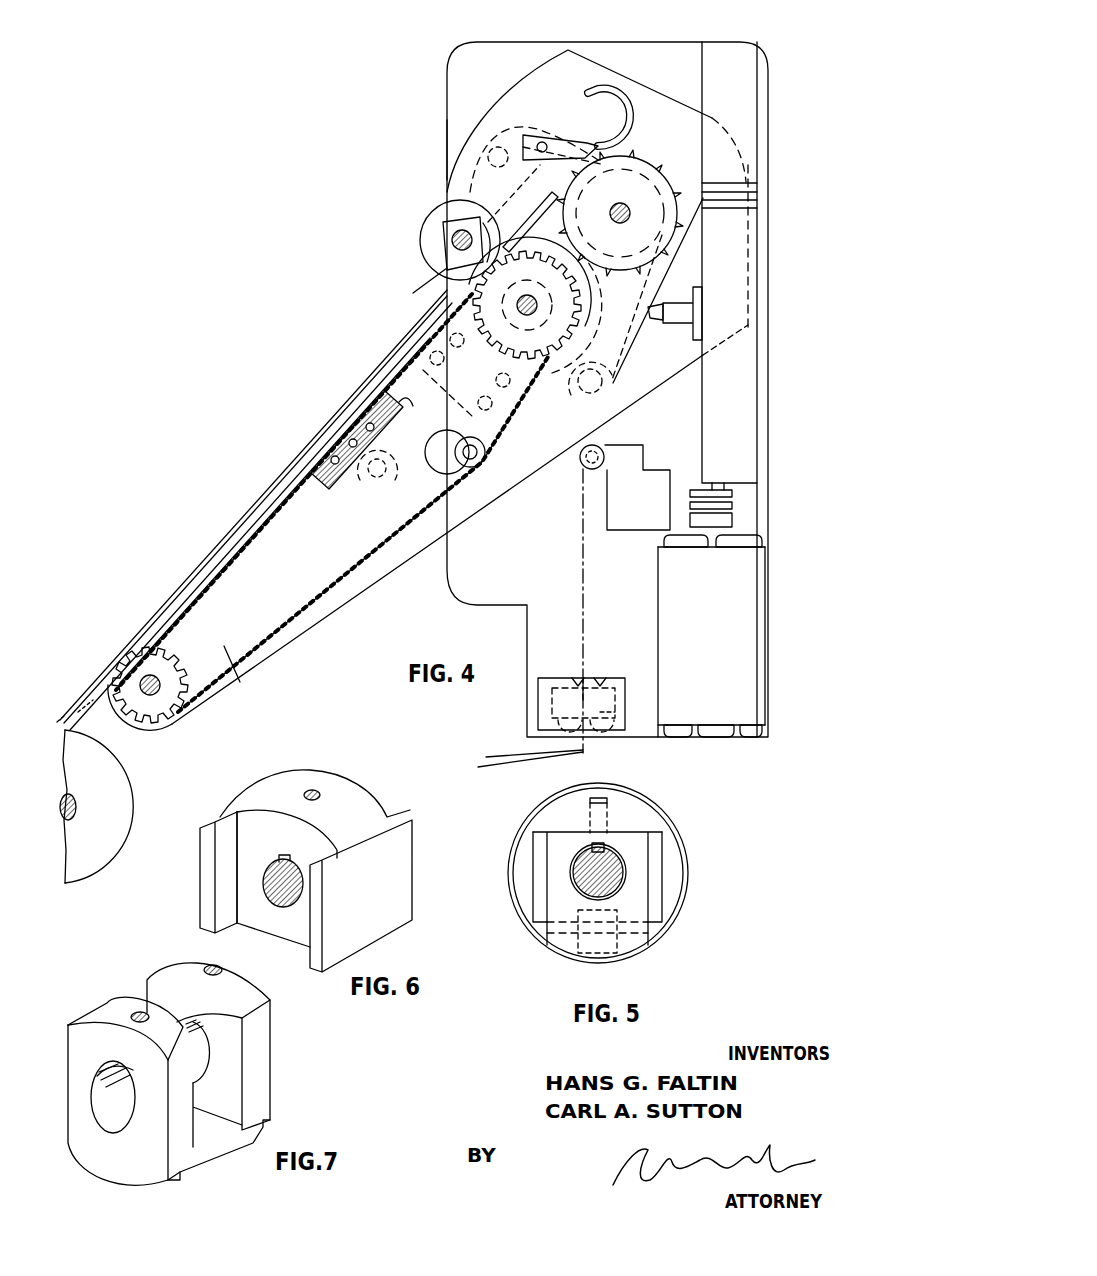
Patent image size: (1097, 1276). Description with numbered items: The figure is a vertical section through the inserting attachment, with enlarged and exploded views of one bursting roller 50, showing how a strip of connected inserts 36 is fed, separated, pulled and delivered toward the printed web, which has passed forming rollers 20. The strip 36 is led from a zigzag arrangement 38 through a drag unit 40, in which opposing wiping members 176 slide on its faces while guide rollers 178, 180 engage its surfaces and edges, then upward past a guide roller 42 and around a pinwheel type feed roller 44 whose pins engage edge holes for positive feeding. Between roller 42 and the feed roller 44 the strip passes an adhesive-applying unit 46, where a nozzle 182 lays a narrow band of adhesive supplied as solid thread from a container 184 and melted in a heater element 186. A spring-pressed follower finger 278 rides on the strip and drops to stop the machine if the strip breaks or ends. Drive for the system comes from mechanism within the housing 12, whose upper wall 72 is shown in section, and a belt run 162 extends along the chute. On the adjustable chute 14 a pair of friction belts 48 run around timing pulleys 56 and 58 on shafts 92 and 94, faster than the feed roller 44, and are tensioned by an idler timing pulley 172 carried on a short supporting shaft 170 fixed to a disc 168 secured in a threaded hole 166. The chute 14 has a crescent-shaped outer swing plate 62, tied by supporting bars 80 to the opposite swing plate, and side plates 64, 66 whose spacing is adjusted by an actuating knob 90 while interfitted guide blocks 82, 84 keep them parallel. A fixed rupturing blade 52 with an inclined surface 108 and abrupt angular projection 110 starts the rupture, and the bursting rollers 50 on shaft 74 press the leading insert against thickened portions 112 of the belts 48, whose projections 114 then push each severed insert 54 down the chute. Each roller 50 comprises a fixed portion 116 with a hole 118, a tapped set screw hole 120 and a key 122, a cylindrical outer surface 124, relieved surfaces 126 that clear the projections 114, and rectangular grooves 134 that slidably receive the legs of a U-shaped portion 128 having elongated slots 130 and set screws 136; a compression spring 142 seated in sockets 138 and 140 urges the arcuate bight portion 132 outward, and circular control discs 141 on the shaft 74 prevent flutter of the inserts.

In FIG. 4, the housing 12 is at (443, 95).
In FIG. 4, the adjustable chute 14 is at (228, 528).
In FIG. 4, the forming rollers 20 is at (128, 786).
In FIG. 4, the strip of connected inserts 36 is at (580, 573).
In FIG. 4, the zigzag arrangement 38 is at (528, 750).
In FIG. 4, the drag unit 40 is at (576, 668).
In FIG. 4, the guide roller 42 is at (603, 450).
In FIG. 4, the pinwheel type feed roller 44 is at (651, 168).
In FIG. 4, the adhesive-applying unit 46 is at (740, 300).
In FIG. 4, the flexible friction belts 48 is at (294, 478).
In FIG. 4, the pressure or bursting rollers 50 is at (437, 218).
In FIG. 5, the pressure or bursting rollers 50 is at (670, 893).
In FIG. 4, the fixed rupturing blade 52 is at (534, 213).
In FIG. 4, the severed or separated inserts 54 is at (73, 702).
In FIG. 4, the timing pulley 56 is at (505, 353).
In FIG. 4, the timing pulley 58 is at (173, 668).
In FIG. 4, the outer swing plate 62 is at (535, 138).
In FIG. 4, the side plate 64 is at (233, 683).
In FIG. 4, the side plate 66 is at (645, 89).
In FIG. 4, the housing cover 72 is at (498, 44).
In FIG. 4, the shaft 74 is at (457, 225).
In FIG. 5, the shaft 74 is at (623, 868).
In FIG. 4, the supporting shafts or bars 80 is at (504, 146).
In FIG. 4, the guide block 82 is at (409, 416).
In FIG. 4, the guide block 84 is at (330, 482).
In FIG. 4, the actuating knob 90 is at (374, 488).
In FIG. 4, the shaft 92 is at (540, 308).
In FIG. 4, the shaft 94 is at (146, 670).
In FIG. 4, the inclined surface 108 is at (545, 150).
In FIG. 4, the abrupt angular projection 110 is at (514, 224).
In FIG. 4, the thickened portions 112 is at (445, 292).
In FIG. 4, the projections 114 is at (486, 232).
In FIG. 4, the fixed portion 116 is at (428, 228).
In FIG. 6, the fixed portion 116 is at (374, 794).
In FIG. 6, the hole 118 is at (290, 905).
In FIG. 6, the tapped set screw hole 120 is at (318, 793).
In FIG. 5, the tapped set screw hole 120 is at (610, 808).
In FIG. 5, the key 122 is at (606, 843).
In FIG. 6, the outer surface 124 is at (287, 790).
In FIG. 5, the outer surface 124 is at (548, 812).
In FIG. 6, the relieved outer surfaces 126 is at (198, 865).
In FIG. 5, the relieved outer surfaces 126 is at (533, 866).
In FIG. 7, the U-shaped portion 128 is at (262, 1072).
In FIG. 5, the U-shaped portion 128 is at (650, 930).
In FIG. 7, the elongated slots 130 is at (205, 1041).
In FIG. 5, the elongated slots 130 is at (620, 898).
In FIG. 4, the bight portion 132 is at (445, 263).
In FIG. 7, the bight portion 132 is at (233, 1163).
In FIG. 5, the bight portion 132 is at (578, 952).
In FIG. 6, the rectangular grooves 134 is at (344, 779).
In FIG. 5, the rectangular grooves 134 is at (625, 858).
In FIG. 7, the set screws 136 is at (133, 1010).
In FIG. 5, the set screws 136 is at (598, 796).
In FIG. 5, the socket 138 is at (563, 945).
In FIG. 5, the socket 140 is at (535, 898).
In FIG. 5, the circular control discs 141 is at (660, 940).
In FIG. 5, the compression spring 142 is at (620, 958).
In FIG. 4, the chain run 162 is at (238, 545).
In FIG. 4, the threaded holes 166 is at (472, 462).
In FIG. 4, the disc 168 is at (487, 452).
In FIG. 4, the short supporting shaft 170 is at (443, 460).
In FIG. 4, the idler timing pulley 172 is at (447, 438).
In FIG. 4, the wiping members 176 is at (573, 682).
In FIG. 4, the guide rollers 178 is at (620, 712).
In FIG. 4, the guide rollers 180 is at (632, 681).
In FIG. 4, the nozzle 182 is at (678, 302).
In FIG. 4, the container 184 is at (762, 592).
In FIG. 4, the heater element 186 is at (750, 380).
In FIG. 4, the spring-pressed follower finger 278 is at (605, 88).